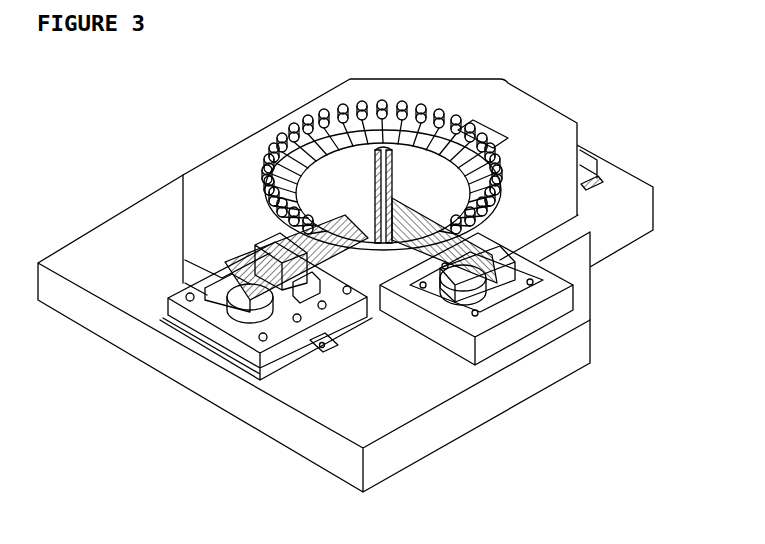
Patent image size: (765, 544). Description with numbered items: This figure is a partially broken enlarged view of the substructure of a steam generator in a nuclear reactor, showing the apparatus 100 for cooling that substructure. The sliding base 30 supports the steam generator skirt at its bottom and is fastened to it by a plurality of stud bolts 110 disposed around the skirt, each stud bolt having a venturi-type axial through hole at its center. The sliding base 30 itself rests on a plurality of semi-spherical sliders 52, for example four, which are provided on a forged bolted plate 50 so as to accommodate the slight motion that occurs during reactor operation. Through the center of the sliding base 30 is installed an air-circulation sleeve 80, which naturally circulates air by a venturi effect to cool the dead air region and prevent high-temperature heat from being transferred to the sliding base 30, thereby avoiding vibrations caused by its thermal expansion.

The apparatus for cooling a substructure of a steam generator 100 is at (345, 277).
The sliding base 30 is at (512, 97).
The forged bolted plate 50 is at (108, 236).
The semi-spherical sliders 52 is at (262, 302).
The air-circulation sleeve 80 is at (390, 155).
The stud bolts 110 is at (362, 107).